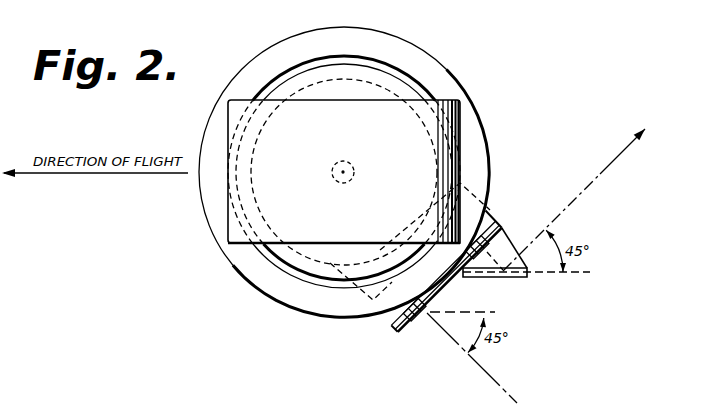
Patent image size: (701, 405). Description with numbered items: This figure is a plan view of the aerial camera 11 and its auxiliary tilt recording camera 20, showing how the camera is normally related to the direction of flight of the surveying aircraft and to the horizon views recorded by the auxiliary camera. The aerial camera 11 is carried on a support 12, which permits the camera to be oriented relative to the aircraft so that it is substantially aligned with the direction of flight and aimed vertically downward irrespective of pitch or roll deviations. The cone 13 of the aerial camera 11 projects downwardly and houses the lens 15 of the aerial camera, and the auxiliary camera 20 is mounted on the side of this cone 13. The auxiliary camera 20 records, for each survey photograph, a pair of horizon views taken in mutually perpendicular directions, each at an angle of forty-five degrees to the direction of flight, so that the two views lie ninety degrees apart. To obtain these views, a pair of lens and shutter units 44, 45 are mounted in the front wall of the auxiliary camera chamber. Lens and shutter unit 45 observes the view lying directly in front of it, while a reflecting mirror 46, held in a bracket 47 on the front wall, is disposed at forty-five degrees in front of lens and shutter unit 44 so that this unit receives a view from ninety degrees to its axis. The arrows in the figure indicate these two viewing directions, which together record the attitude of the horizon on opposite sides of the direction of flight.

The aerial camera 11 is at (468, 135).
The support 12 is at (375, 26).
The cone 13 is at (422, 121).
The lens 15 is at (343, 160).
The auxiliary camera 20 is at (490, 278).
The lens and shutter unit 44 is at (493, 246).
The lens and shutter unit 45 is at (426, 318).
The reflecting mirror 46 is at (493, 273).
The bracket 47 is at (517, 278).